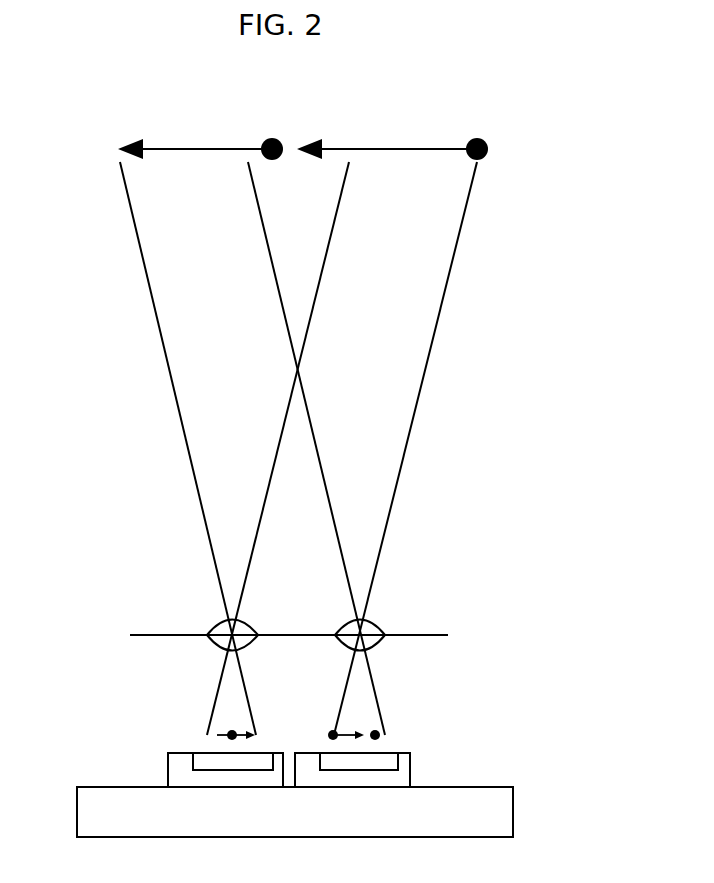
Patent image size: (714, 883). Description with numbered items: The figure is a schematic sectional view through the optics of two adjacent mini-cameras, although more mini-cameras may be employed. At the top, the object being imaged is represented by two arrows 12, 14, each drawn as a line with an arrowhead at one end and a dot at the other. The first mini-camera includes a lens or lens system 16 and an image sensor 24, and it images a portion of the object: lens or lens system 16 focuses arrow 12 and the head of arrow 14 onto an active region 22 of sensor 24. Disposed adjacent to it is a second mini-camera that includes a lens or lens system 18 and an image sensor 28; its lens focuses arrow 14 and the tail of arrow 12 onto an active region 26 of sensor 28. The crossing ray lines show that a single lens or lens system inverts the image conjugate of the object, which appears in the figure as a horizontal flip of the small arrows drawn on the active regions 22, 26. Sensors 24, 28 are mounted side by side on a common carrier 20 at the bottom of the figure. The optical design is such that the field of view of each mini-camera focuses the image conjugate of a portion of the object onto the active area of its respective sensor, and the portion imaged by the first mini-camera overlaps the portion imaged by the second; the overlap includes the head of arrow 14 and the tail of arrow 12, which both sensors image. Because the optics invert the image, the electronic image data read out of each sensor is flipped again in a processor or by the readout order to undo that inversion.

The arrow 12 is at (198, 148).
The arrow 14 is at (402, 148).
The lens or lens system 16 is at (220, 622).
The lens or lens system 18 is at (347, 622).
The carrier 20 is at (102, 786).
The active region 22 is at (207, 750).
The image sensor 24 is at (168, 757).
The active region 26 is at (335, 750).
The image sensor 28 is at (412, 757).